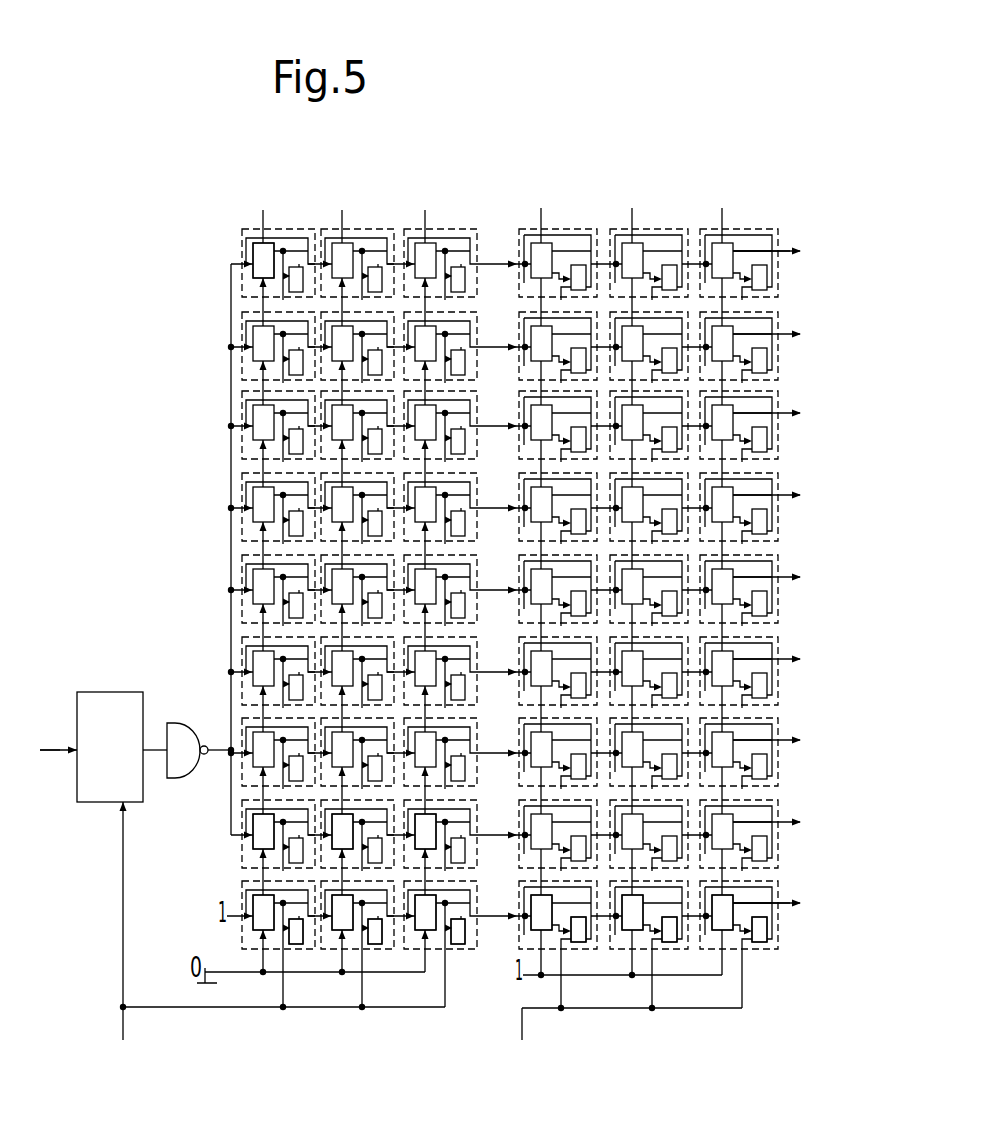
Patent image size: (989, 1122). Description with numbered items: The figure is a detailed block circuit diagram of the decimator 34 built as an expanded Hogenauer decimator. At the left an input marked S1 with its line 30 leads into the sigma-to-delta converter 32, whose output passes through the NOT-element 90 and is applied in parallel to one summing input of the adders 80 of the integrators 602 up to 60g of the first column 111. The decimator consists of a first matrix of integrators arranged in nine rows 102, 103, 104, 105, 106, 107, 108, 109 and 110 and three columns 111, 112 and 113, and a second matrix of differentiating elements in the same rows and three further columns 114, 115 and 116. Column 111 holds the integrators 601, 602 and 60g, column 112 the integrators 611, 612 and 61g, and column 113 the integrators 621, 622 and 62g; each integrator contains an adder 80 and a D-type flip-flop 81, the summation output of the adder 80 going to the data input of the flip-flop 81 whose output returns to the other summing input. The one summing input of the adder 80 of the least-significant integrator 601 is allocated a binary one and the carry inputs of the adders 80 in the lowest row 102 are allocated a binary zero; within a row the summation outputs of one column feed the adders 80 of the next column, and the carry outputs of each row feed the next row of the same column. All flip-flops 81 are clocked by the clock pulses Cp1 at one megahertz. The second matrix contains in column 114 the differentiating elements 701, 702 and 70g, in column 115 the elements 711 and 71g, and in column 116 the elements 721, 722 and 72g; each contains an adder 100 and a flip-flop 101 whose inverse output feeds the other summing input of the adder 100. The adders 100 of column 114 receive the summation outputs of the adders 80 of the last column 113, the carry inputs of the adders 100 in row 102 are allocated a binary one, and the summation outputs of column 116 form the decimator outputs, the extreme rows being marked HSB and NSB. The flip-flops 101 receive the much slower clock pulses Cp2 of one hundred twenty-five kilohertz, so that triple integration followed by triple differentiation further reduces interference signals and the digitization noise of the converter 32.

The input signal line 30 is at (53, 752).
The sigma-to-delta converter 32 is at (104, 691).
The decimator 34 is at (477, 642).
The integrator 60g is at (243, 290).
The integrator 602 is at (242, 862).
The integrator 601 is at (242, 940).
The integrator 61g is at (333, 227).
The integrator 612 is at (322, 850).
The integrator 611 is at (332, 952).
The integrator 62g is at (410, 227).
The integrator 622 is at (478, 858).
The integrator 621 is at (410, 952).
The differentiating element 70g is at (528, 230).
The differentiating element 702 is at (540, 830).
The differentiating element 701 is at (527, 953).
The differentiating element 71g is at (617, 230).
The differentiating element 711 is at (615, 953).
The differentiating element 72g is at (707, 230).
The differentiating element 722 is at (777, 860).
The differentiating element 721 is at (707, 953).
The adder 80 is at (252, 270).
The flip-flop 81 is at (293, 950).
The NOT-element 90 is at (176, 722).
The adder 100 is at (538, 976).
The flip-flop 101 is at (573, 950).
The row 102 is at (797, 894).
The row 103 is at (797, 813).
The row 104 is at (797, 731).
The row 105 is at (797, 650).
The row 106 is at (797, 568).
The row 107 is at (797, 486).
The row 108 is at (797, 404).
The row 109 is at (797, 325).
The row 110 is at (797, 242).
The column 111 is at (278, 222).
The column 112 is at (355, 217).
The column 113 is at (435, 217).
The column 114 is at (548, 217).
The column 115 is at (640, 217).
The column 116 is at (728, 220).
The input signal S1 is at (41, 727).
The clock pulses Cp1 is at (279, 938).
The clock pulses Cp2 is at (624, 1014).
The most significant bit output HSB is at (779, 276).
The least significant bit output NSB is at (779, 932).